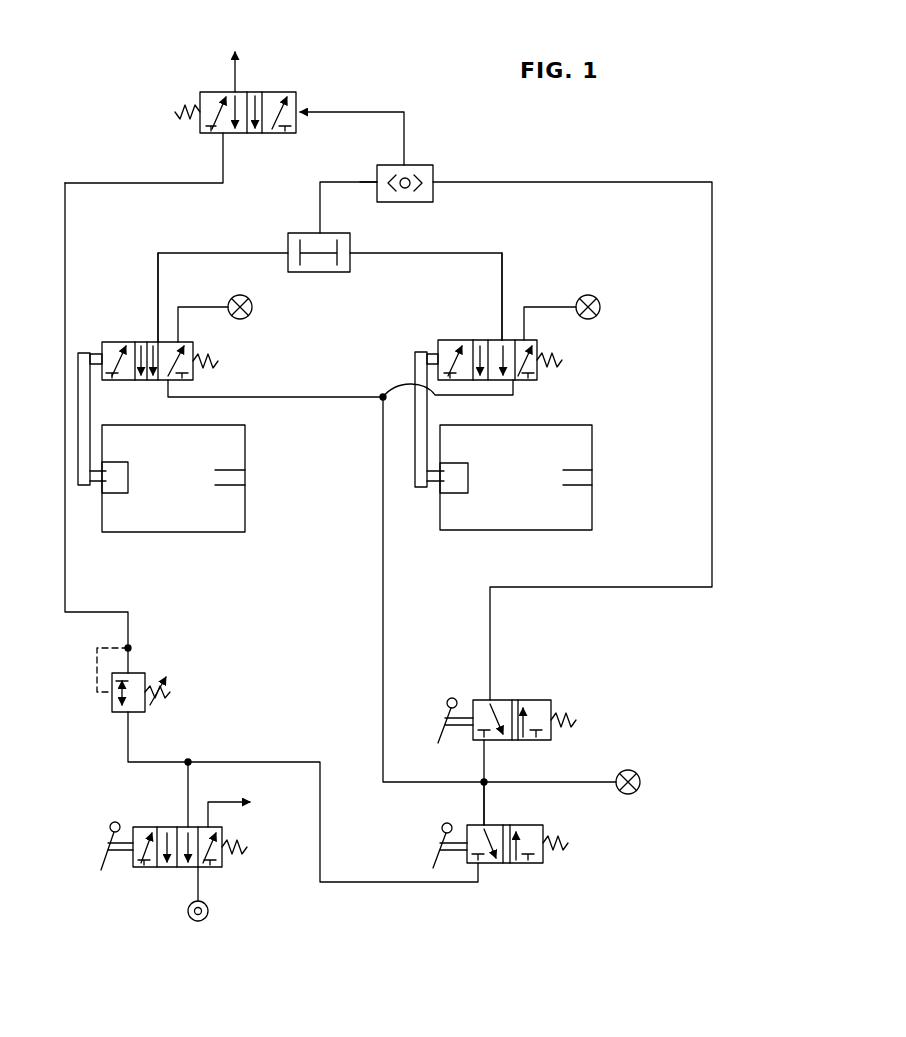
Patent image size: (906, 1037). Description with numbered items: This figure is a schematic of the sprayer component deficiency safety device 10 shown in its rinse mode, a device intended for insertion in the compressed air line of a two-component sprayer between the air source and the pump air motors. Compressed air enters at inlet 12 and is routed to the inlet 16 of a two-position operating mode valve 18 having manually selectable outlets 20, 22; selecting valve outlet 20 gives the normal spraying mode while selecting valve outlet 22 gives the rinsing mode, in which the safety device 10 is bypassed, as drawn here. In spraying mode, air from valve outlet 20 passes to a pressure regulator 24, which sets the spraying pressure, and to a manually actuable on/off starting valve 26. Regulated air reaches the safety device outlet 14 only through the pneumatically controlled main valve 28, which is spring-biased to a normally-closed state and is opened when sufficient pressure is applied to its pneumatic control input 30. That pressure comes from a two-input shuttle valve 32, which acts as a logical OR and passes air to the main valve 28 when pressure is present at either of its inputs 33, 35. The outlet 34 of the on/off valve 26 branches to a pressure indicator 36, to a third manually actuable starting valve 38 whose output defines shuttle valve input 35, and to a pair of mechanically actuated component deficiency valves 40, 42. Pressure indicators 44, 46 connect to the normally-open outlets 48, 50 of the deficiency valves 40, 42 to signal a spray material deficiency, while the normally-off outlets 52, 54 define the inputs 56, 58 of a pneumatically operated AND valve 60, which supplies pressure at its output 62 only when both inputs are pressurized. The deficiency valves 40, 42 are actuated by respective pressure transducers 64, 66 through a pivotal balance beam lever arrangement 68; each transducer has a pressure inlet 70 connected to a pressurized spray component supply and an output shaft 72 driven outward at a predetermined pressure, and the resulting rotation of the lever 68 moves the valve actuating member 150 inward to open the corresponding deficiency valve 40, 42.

The sprayer component deficiency safety device 10 is at (640, 152).
The inlet 12 is at (208, 914).
The outlet 14 is at (236, 52).
The inlet of operating mode valve 16 is at (200, 882).
The two-position operating mode valve 18 is at (147, 868).
The valve outlet 20 is at (186, 805).
The valve outlet 22 is at (212, 800).
The pressure regulator 24 is at (110, 696).
The on/off starting valve 26 is at (538, 864).
The main valve 28 is at (265, 92).
The pneumatic control input 30 is at (346, 110).
The shuttle valve 32 is at (428, 165).
The shuttle valve input 33 is at (360, 182).
The outlet of on/off starting valve 34 is at (486, 810).
The shuttle valve input 35 is at (452, 184).
The pressure indicator 36 is at (642, 774).
The starting valve 38 is at (538, 700).
The component deficiency valve 40 is at (116, 342).
The component deficiency valve 42 is at (534, 382).
The pressure indicator 44 is at (250, 315).
The pressure indicator 46 is at (604, 300).
The normally-open outlet 48 is at (182, 328).
The normally-open outlet 50 is at (526, 324).
The normally-off outlet 52 is at (158, 336).
The normally-off outlet 54 is at (500, 338).
The AND valve input 56 is at (268, 253).
The AND valve input 58 is at (380, 253).
The AND valve 60 is at (352, 273).
The AND valve output 62 is at (408, 135).
The pressure transducer 64 is at (165, 532).
The pressure transducer 66 is at (545, 530).
The pivotal balance beam lever arrangement 68 is at (80, 400).
The pressure inlet 70 is at (250, 472).
The output shaft 72 is at (96, 490).
The valve actuating member 150 is at (85, 353).